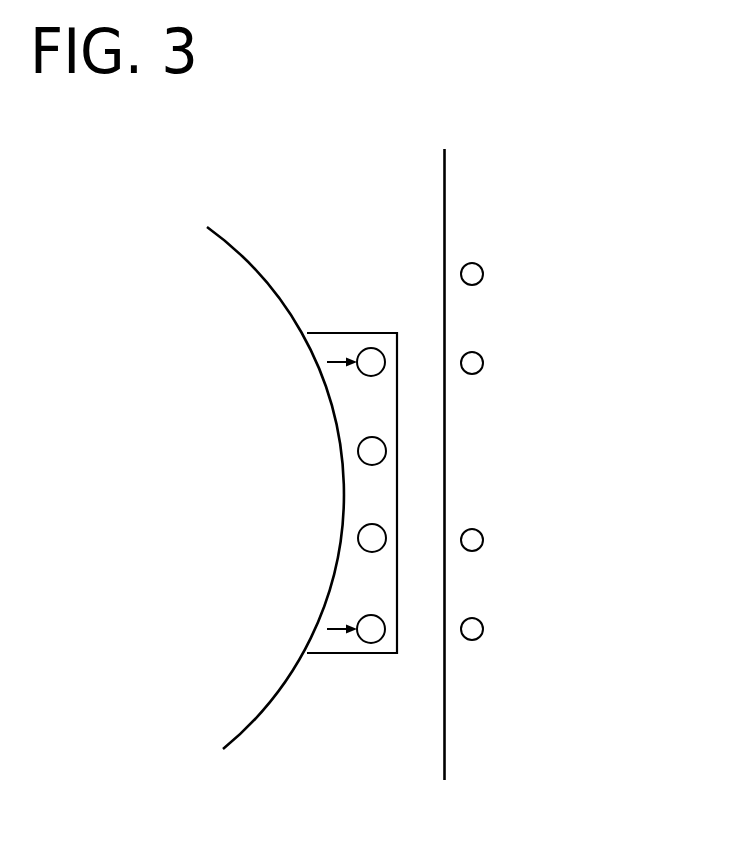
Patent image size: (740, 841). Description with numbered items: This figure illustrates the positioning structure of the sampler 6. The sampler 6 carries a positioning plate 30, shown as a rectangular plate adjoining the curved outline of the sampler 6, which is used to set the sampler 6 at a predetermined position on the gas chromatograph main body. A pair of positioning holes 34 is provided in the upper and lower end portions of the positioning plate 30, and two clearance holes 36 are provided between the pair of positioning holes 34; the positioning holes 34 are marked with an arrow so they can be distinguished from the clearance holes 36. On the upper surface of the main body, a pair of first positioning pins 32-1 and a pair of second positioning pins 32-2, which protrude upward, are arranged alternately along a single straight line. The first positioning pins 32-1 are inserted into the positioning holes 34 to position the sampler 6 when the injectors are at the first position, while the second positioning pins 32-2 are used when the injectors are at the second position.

The sampler 6 is at (230, 238).
The positioning plate 30 is at (344, 343).
The positioning holes 34 is at (370, 349).
The clearance holes 36 is at (383, 530).
The first positioning pins 32-1 is at (472, 363).
The second positioning pins 32-2 is at (472, 273).